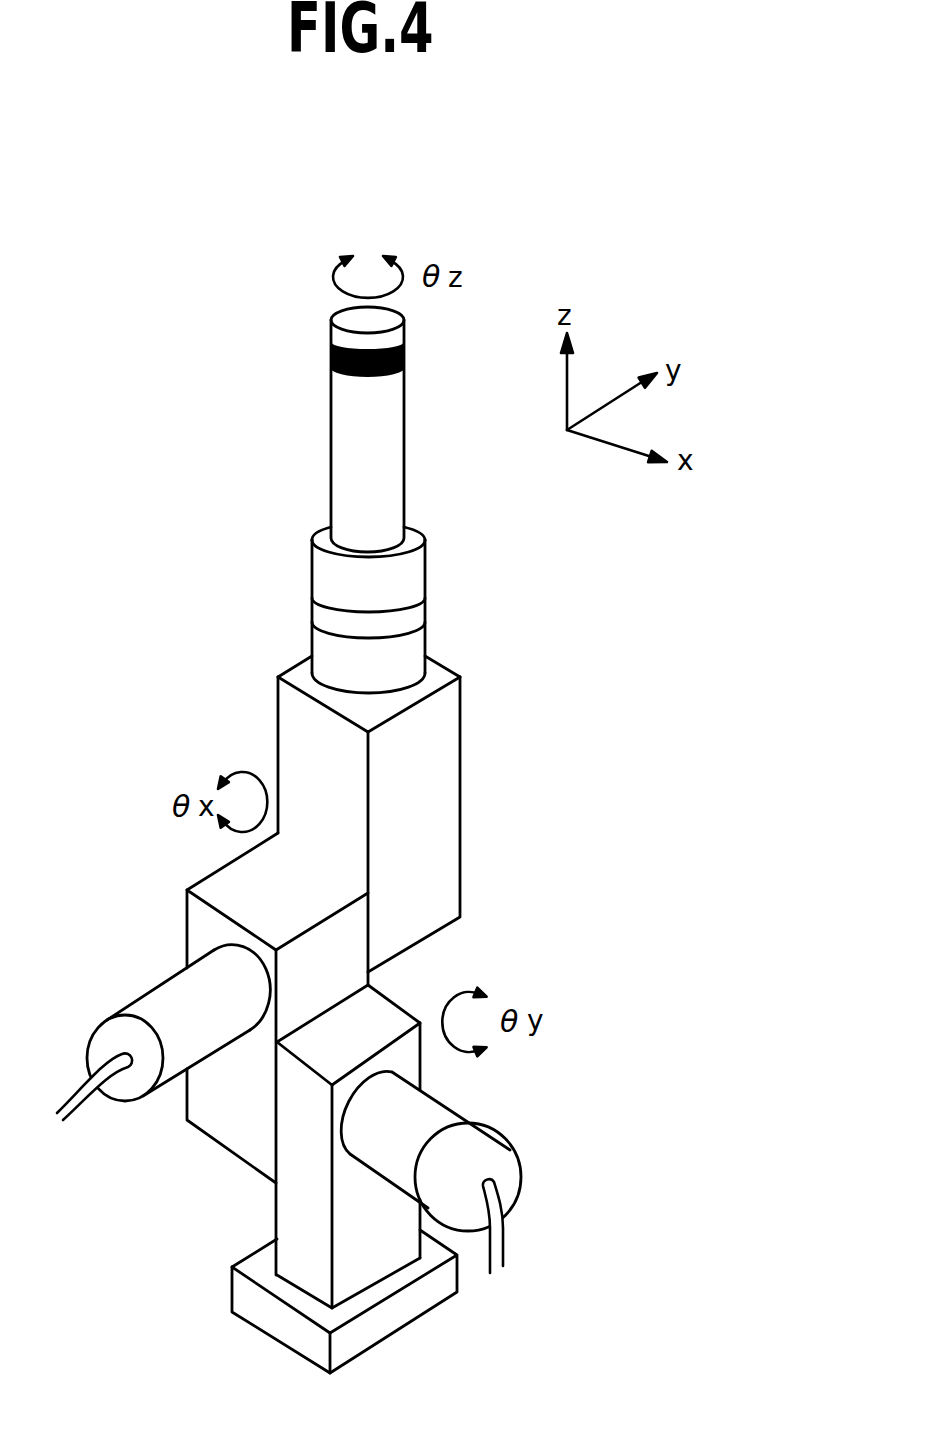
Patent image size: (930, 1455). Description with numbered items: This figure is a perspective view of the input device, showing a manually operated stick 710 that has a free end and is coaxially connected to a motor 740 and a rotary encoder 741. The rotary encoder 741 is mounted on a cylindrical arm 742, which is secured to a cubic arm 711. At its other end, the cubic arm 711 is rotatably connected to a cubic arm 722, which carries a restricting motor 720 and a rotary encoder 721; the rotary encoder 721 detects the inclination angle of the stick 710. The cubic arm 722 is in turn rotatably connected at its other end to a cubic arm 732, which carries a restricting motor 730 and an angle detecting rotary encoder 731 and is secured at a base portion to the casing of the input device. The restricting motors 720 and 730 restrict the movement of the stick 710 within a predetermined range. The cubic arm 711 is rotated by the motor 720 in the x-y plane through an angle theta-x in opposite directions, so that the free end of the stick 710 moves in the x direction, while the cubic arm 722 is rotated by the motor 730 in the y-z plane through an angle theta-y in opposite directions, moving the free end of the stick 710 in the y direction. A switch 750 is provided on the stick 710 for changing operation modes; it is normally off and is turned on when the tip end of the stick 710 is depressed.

The stick 710 is at (398, 427).
The switch 750 is at (331, 353).
The motor 740 is at (420, 570).
The rotary encoder 741 is at (420, 601).
The cylindrical arm 742 is at (420, 647).
The cubic arm 711 is at (453, 760).
The restricting motor 720 is at (193, 988).
The rotary encoder 721 is at (128, 1008).
The cubic arm 722 is at (229, 1138).
The restricting motor 730 is at (443, 1097).
The angle detecting rotary encoder 731 is at (483, 1135).
The cubic arm 732 is at (275, 1208).